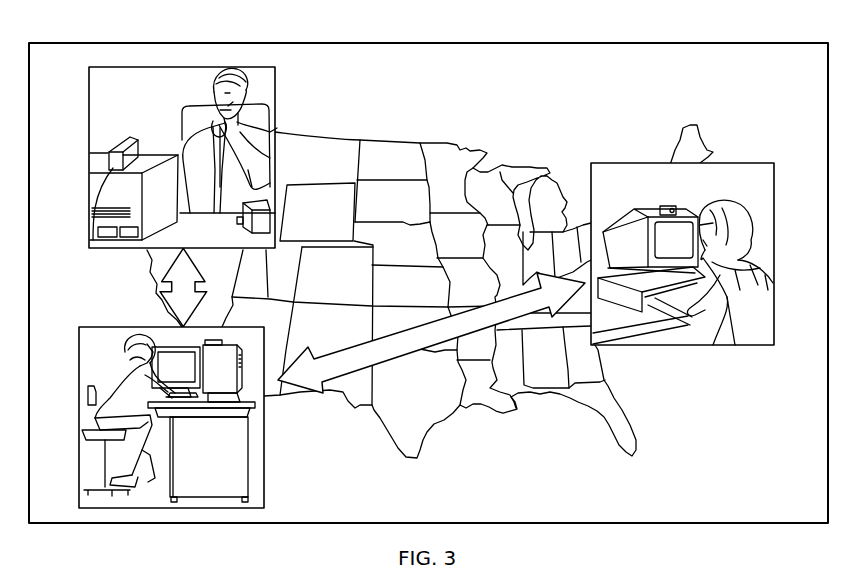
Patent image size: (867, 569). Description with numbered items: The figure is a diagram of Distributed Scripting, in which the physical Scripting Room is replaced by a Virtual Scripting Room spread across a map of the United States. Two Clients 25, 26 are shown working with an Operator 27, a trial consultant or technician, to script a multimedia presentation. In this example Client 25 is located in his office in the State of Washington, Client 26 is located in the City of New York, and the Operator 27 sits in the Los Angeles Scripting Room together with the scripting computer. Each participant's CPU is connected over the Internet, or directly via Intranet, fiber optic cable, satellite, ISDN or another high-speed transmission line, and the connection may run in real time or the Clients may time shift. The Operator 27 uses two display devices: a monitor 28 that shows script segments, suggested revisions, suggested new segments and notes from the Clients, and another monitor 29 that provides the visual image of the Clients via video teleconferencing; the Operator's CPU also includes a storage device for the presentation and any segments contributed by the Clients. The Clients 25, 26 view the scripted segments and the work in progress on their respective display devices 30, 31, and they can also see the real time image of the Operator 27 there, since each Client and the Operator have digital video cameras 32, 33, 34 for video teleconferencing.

The Client 25 is at (247, 74).
The Client 26 is at (717, 204).
The Operator 27 is at (118, 357).
The monitor 28 is at (170, 358).
The monitor 29 is at (217, 371).
The display device 30 is at (147, 157).
The display device 31 is at (650, 218).
The digital video camera 32 is at (124, 140).
The digital video camera 33 is at (662, 210).
The digital video camera 34 is at (214, 342).